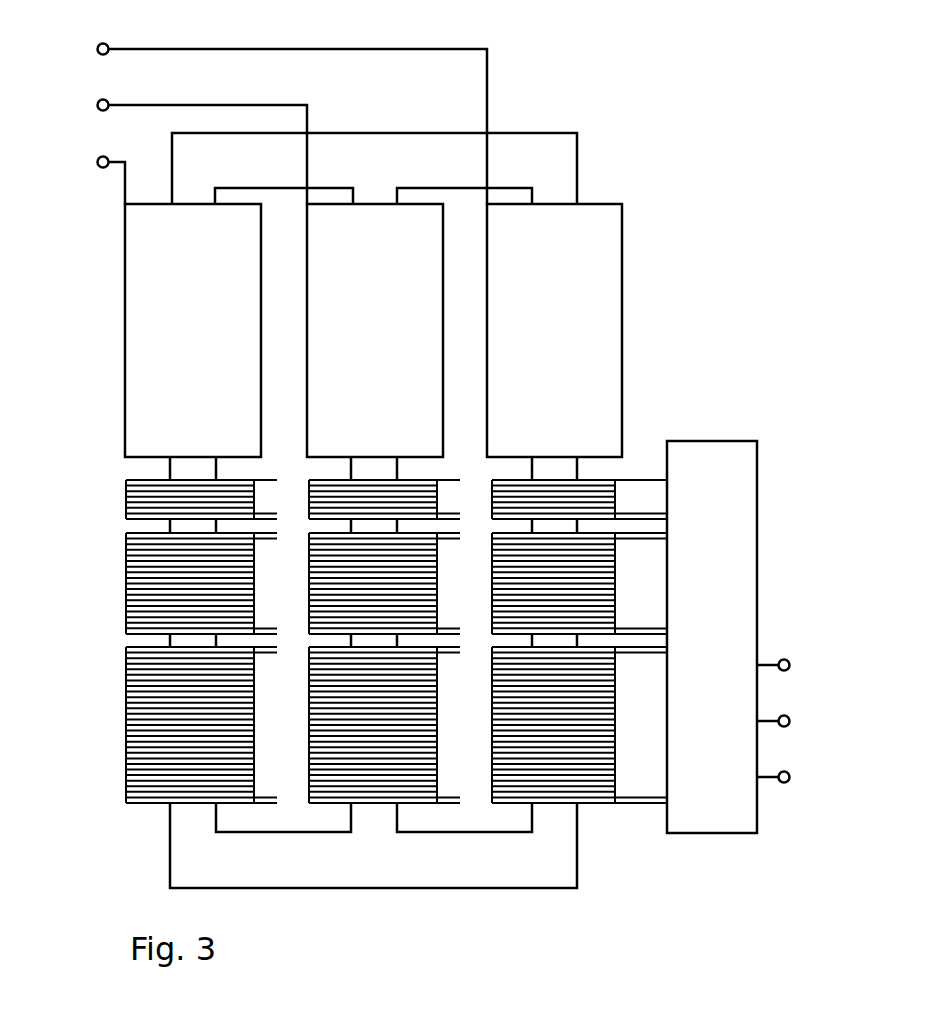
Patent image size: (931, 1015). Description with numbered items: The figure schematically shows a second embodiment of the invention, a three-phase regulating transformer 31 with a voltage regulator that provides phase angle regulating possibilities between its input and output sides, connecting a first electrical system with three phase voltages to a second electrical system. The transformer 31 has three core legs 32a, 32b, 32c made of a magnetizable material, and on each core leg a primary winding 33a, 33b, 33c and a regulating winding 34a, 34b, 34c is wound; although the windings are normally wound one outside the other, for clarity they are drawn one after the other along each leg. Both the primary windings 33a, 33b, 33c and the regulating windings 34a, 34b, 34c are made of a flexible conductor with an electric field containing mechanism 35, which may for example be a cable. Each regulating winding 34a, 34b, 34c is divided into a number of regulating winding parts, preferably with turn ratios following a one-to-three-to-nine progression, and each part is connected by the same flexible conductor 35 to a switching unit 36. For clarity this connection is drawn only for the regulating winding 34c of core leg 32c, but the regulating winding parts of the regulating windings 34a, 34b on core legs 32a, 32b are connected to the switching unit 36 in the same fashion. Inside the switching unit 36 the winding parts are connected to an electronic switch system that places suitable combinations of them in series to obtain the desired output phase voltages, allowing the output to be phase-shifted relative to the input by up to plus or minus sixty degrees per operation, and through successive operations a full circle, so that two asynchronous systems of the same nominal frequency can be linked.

The three-phase regulating transformer 31 is at (618, 96).
The core leg 32a is at (188, 470).
The core leg 32b is at (373, 197).
The core leg 32c is at (558, 470).
The primary winding 33a is at (142, 293).
The primary winding 33b is at (325, 381).
The primary winding 33c is at (582, 238).
The regulating winding 34a is at (79, 746).
The regulating winding 34b is at (303, 804).
The regulating winding 34c is at (612, 831).
The flexible conductor with electric field containing mechanism 35 is at (632, 480).
The switching unit 36 is at (715, 460).